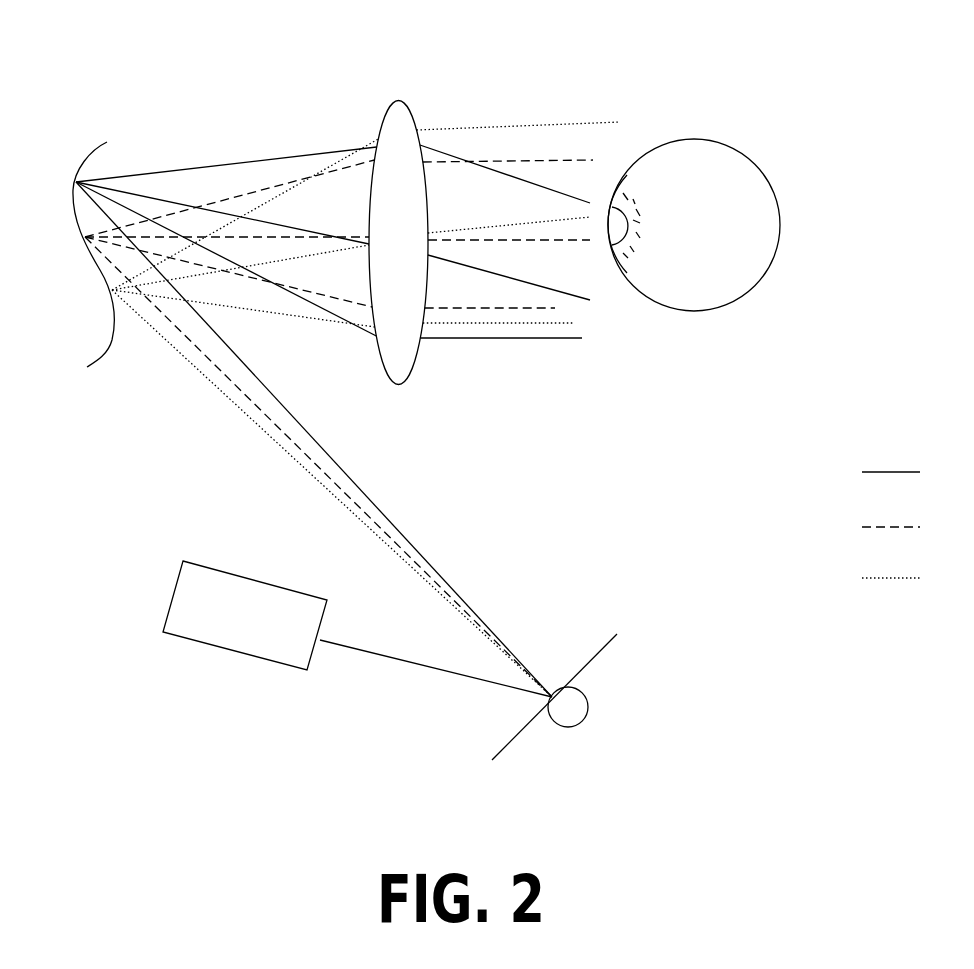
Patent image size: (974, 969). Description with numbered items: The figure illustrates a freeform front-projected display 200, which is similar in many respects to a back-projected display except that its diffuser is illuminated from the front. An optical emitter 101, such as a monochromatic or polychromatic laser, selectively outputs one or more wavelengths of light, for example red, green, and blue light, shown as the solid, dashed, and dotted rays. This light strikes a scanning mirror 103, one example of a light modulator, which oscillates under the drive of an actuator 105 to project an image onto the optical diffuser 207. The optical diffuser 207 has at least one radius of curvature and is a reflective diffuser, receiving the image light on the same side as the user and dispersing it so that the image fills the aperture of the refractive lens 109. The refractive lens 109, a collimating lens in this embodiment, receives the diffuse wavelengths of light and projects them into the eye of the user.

The freeform front-projected display 200 is at (440, 24).
The optical diffuser 207 is at (93, 148).
The refractive lens 109 is at (400, 122).
The optical emitter 101 is at (257, 638).
The scanning mirror 103 is at (608, 635).
The actuator 105 is at (570, 718).